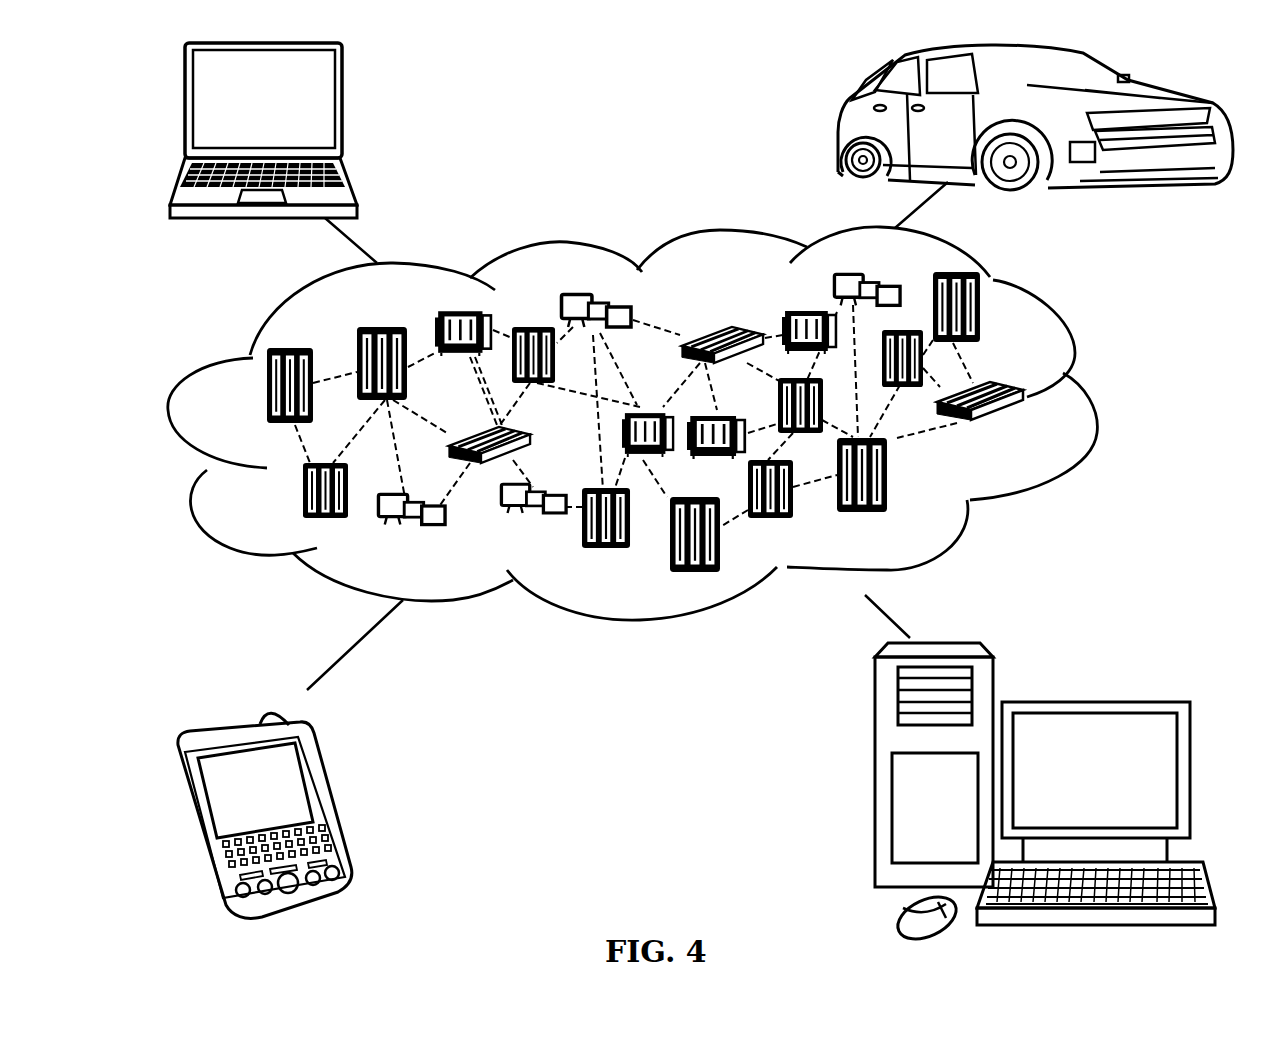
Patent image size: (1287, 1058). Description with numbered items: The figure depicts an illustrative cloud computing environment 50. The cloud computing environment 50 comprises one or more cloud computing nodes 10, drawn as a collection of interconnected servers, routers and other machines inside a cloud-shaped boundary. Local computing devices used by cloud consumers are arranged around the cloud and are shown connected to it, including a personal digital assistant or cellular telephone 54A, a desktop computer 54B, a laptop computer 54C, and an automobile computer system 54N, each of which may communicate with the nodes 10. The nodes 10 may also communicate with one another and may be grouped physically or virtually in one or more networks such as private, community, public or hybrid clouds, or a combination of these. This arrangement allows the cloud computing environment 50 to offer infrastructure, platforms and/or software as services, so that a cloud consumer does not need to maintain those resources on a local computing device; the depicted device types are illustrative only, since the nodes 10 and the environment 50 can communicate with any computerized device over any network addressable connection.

The cloud computing node 10 is at (1024, 427).
The cloud computing environment 50 is at (1092, 400).
The personal digital assistant or cellular telephone 54A is at (327, 803).
The desktop computer 54B is at (1093, 700).
The laptop computer 54C is at (345, 108).
The automobile computer system 54N is at (842, 127).